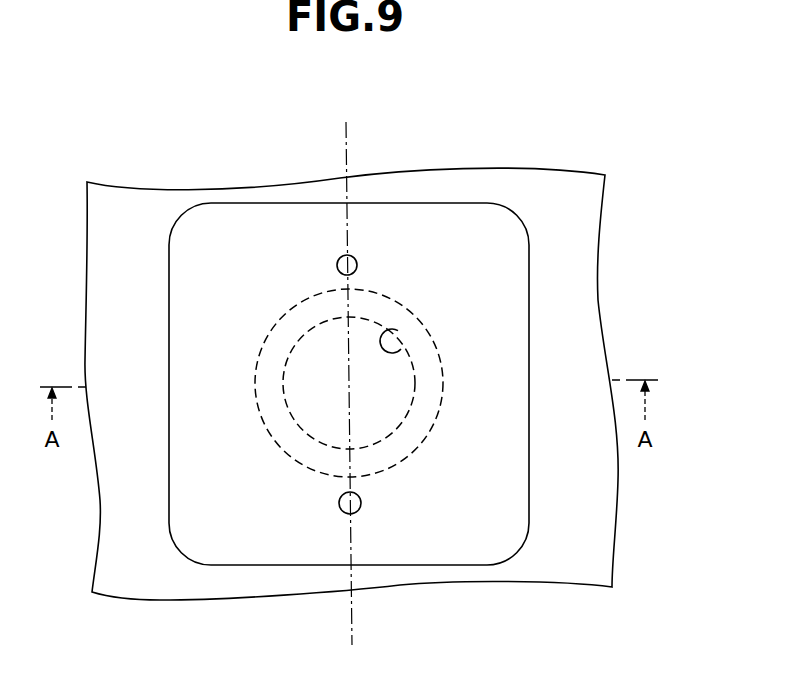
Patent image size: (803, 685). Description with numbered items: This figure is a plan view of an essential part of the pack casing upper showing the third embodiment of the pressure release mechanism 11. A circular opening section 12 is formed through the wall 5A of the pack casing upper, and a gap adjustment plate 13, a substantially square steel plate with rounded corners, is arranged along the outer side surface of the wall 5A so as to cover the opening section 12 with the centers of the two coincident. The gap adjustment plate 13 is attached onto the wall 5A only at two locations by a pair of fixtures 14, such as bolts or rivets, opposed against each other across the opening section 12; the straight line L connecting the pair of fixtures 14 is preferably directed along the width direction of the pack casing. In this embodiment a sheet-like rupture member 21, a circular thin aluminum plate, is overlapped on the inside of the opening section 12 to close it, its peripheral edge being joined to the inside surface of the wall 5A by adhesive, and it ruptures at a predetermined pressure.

The wall 5A is at (597, 535).
The pressure release mechanism 11 is at (163, 503).
The opening section 12 is at (403, 352).
The gap adjustment plate 13 is at (260, 262).
The fixtures 14 is at (357, 255).
The rupture member 21 is at (443, 372).
The straight line L is at (345, 155).